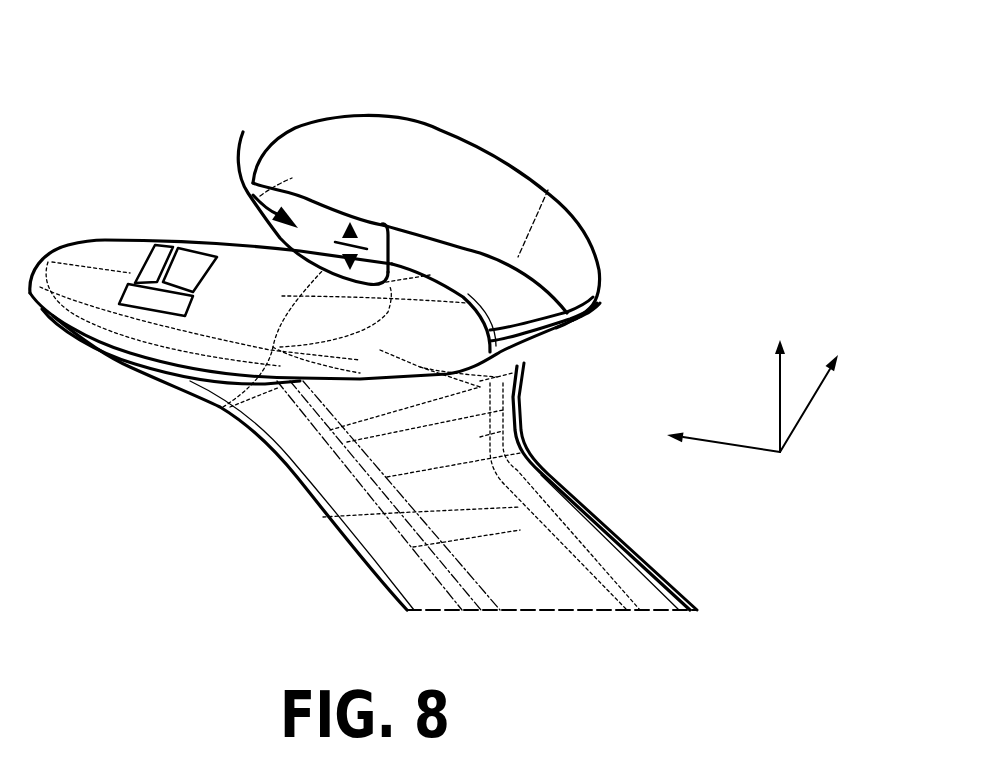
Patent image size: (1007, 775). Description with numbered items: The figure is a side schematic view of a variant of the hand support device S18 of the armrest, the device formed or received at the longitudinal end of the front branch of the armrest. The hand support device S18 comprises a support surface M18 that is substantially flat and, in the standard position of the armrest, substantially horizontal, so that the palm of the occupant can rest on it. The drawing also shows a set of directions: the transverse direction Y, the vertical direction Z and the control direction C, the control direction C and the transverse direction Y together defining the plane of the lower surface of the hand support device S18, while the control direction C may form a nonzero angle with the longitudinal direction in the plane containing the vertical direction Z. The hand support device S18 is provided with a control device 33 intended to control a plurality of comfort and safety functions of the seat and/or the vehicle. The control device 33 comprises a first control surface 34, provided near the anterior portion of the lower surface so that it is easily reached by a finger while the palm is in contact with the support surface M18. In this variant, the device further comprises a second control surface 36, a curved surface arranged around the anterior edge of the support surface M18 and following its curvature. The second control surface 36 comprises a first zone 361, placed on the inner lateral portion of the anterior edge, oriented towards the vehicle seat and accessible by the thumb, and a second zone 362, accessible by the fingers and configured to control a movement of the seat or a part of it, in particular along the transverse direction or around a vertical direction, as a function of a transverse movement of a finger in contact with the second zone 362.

The control device 33 is at (118, 173).
The first control surface 34 is at (142, 318).
The second control surface 36 is at (268, 180).
The first zone 361 is at (375, 233).
The second zone 362 is at (290, 180).
The support surface M18 is at (373, 150).
The hand support device S18 is at (605, 94).
The vertical direction Z is at (766, 383).
The transverse direction Y is at (821, 403).
The control direction C is at (716, 459).